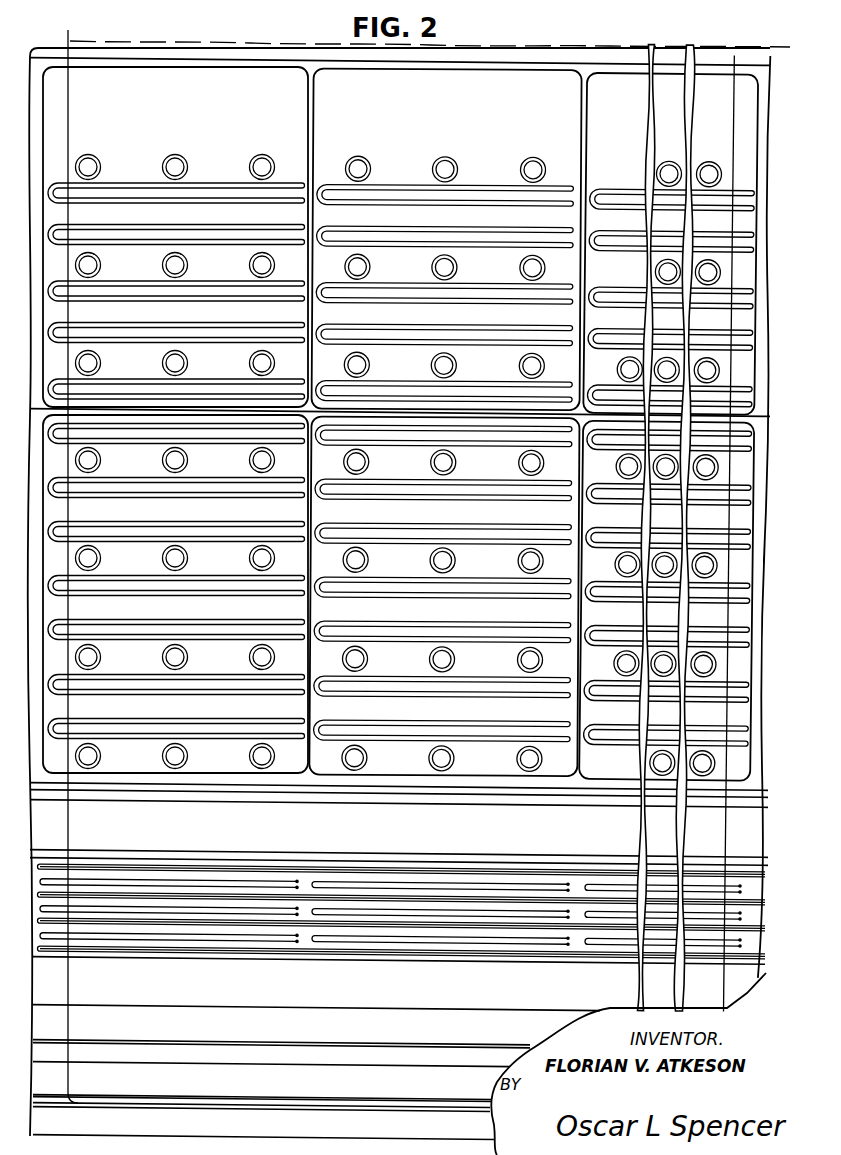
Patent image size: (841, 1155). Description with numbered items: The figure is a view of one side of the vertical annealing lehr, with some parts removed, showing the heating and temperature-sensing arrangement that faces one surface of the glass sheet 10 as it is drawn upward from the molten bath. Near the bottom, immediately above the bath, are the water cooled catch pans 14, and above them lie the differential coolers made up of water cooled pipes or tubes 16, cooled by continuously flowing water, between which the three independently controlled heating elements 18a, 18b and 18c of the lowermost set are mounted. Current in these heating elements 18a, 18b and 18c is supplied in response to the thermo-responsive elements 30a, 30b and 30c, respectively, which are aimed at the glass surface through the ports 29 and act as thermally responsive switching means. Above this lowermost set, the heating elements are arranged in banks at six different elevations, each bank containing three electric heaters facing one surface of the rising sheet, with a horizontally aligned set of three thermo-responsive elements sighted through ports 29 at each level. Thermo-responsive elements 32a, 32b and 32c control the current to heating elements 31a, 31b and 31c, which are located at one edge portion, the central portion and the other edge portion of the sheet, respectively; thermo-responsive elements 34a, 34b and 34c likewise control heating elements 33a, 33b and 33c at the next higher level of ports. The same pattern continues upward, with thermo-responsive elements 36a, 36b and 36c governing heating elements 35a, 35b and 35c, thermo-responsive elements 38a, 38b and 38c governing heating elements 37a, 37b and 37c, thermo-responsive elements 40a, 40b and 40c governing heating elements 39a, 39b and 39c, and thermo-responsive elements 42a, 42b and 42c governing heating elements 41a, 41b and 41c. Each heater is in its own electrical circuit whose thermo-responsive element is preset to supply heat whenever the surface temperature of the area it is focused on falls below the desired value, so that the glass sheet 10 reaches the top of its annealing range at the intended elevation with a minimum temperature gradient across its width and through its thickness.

The sheet of glass 10 is at (68, 40).
The water cooled catch pan 14 is at (399, 824).
The water cooled pipes or tubes 16 is at (300, 870).
The heating element 18a is at (88, 878).
The heating element 18b is at (383, 884).
The heating element 18c is at (603, 887).
The ports 29 is at (664, 771).
The thermo-responsive element 30a is at (187, 757).
The thermo-responsive element 30b is at (457, 755).
The thermo-responsive element 30c is at (679, 765).
The heating element 31a is at (184, 695).
The heating element 31b is at (454, 693).
The heating element 31c is at (632, 712).
The thermo-responsive element 32a is at (187, 658).
The thermo-responsive element 32b is at (457, 656).
The thermo-responsive element 32c is at (620, 653).
The heating element 33a is at (184, 597).
The heating element 33b is at (454, 595).
The heating element 33c is at (632, 614).
The thermo-responsive element 34a is at (187, 559).
The thermo-responsive element 34b is at (457, 557).
The thermo-responsive element 34c is at (620, 555).
The heating element 35a is at (184, 500).
The heating element 35b is at (454, 498).
The heating element 35c is at (630, 500).
The thermo-responsive element 36a is at (187, 461).
The thermo-responsive element 36b is at (457, 459).
The thermo-responsive element 36c is at (672, 472).
The heating element 37a is at (108, 393).
The heating element 37b is at (375, 391).
The heating element 37c is at (614, 434).
The thermo-responsive element 38a is at (187, 365).
The thermo-responsive element 38b is at (457, 363).
The thermo-responsive element 38c is at (620, 361).
The heating element 39a is at (184, 302).
The heating element 39b is at (454, 300).
The heating element 39c is at (678, 297).
The thermo-responsive element 40a is at (187, 266).
The thermo-responsive element 40b is at (457, 264).
The thermo-responsive element 40c is at (620, 261).
The heating element 41a is at (184, 200).
The heating element 41b is at (454, 198).
The heating element 41c is at (675, 201).
The thermo-responsive element 42a is at (183, 156).
The thermo-responsive element 42b is at (453, 154).
The thermo-responsive element 42c is at (677, 155).